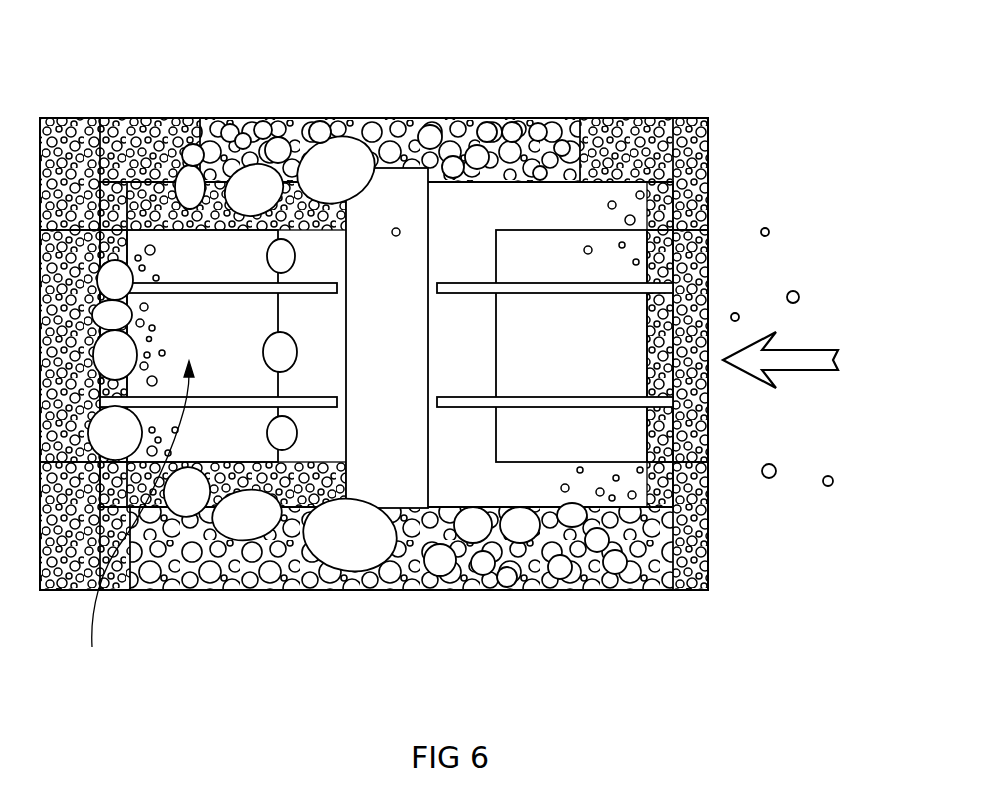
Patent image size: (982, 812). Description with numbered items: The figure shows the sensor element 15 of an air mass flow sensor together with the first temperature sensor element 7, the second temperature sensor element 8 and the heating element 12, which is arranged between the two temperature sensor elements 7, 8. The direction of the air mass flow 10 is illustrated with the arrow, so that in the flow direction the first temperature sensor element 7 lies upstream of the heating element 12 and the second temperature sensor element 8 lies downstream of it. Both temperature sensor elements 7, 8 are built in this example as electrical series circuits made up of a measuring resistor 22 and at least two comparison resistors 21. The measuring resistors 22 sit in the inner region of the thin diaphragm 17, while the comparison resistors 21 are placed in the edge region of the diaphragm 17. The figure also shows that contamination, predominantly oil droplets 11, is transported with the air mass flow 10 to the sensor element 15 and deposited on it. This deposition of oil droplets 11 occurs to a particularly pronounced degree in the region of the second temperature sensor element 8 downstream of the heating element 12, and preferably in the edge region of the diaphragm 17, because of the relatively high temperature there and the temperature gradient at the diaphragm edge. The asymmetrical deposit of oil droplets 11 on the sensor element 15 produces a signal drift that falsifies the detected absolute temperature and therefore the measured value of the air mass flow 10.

The first temperature sensor element 7 is at (603, 322).
The second temperature sensor element 8 is at (139, 519).
The air mass flow 10 is at (795, 360).
The oil droplets 11 is at (769, 478).
The heating element 12 is at (393, 197).
The sensor element 15 is at (678, 120).
The diaphragm 17 is at (483, 480).
The comparison resistors 21 is at (215, 255).
The measuring resistor 22 is at (211, 357).